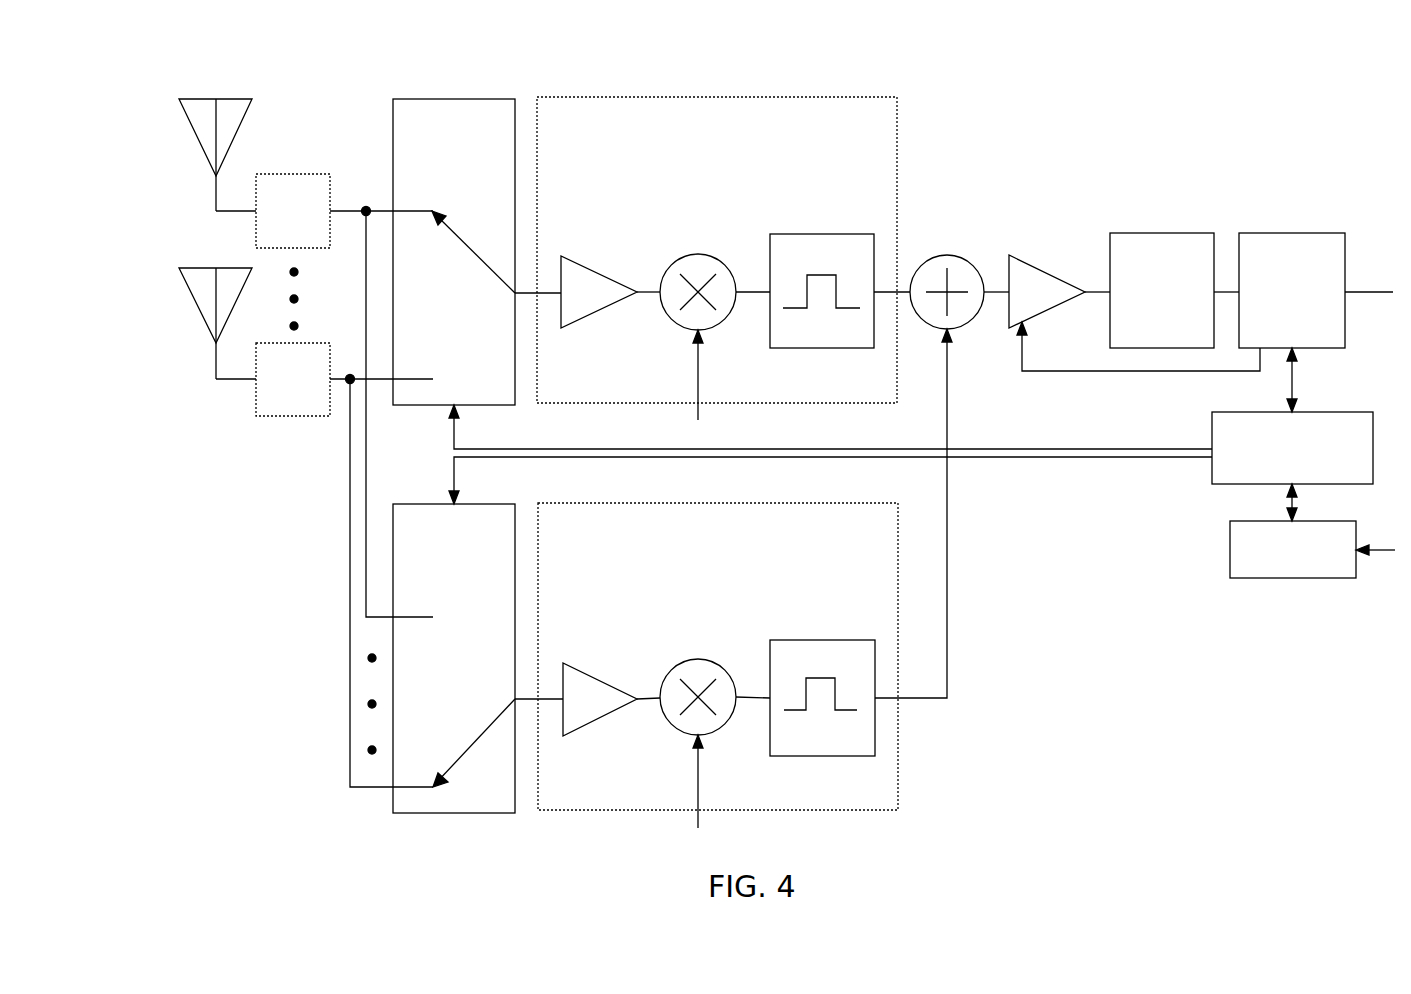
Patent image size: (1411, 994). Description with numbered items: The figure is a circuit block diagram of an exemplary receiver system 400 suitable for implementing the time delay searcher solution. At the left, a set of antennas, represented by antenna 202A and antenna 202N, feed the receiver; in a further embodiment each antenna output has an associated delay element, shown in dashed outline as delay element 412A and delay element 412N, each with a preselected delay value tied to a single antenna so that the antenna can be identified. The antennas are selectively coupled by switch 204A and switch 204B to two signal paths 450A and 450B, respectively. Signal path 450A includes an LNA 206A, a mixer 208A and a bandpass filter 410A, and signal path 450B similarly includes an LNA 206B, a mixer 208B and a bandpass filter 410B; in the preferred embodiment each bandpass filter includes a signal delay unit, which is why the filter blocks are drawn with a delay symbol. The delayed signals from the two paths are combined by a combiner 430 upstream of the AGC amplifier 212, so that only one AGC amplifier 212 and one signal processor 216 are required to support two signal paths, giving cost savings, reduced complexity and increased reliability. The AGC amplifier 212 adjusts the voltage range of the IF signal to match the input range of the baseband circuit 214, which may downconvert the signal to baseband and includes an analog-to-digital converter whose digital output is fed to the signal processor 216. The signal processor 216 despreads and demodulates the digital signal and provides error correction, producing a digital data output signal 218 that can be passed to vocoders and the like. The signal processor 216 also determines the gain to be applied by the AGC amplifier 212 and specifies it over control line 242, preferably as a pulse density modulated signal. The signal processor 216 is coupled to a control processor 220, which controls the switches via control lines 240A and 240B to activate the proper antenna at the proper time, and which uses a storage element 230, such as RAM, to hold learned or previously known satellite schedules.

The antenna 202A is at (207, 97).
The antenna 202N is at (207, 266).
The delay element 412A is at (295, 172).
The delay element 412N is at (293, 418).
The switch 204A is at (453, 97).
The switch 204B is at (499, 503).
The signal path 450A is at (683, 144).
The signal path 450B is at (685, 548).
The LNA 206A is at (600, 273).
The LNA 206B is at (600, 680).
The mixer 208A is at (698, 254).
The mixer 208B is at (700, 659).
The bandpass filter 410A is at (822, 233).
The bandpass filter 410B is at (823, 639).
The combiner 430 is at (948, 254).
The AGC amplifier 212 is at (1047, 272).
The baseband circuit 214 is at (1162, 232).
The signal processor 216 is at (1290, 232).
The output signal 218 is at (1364, 291).
The control line 242 is at (1052, 370).
The control processor 220 is at (1353, 411).
The storage element 230 is at (1260, 580).
The control line 240A is at (622, 448).
The control line 240B is at (830, 457).
The receiver system 400 is at (1092, 549).